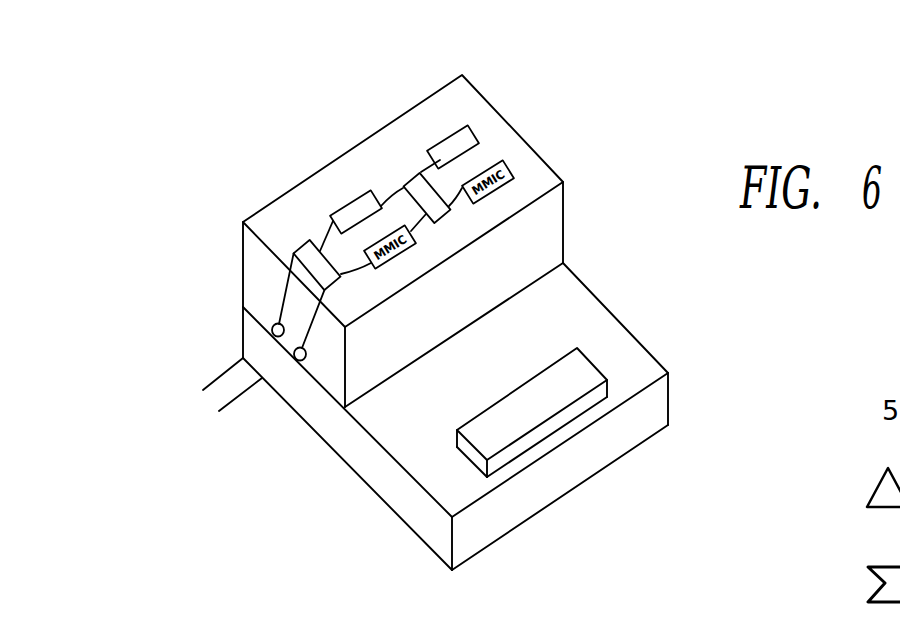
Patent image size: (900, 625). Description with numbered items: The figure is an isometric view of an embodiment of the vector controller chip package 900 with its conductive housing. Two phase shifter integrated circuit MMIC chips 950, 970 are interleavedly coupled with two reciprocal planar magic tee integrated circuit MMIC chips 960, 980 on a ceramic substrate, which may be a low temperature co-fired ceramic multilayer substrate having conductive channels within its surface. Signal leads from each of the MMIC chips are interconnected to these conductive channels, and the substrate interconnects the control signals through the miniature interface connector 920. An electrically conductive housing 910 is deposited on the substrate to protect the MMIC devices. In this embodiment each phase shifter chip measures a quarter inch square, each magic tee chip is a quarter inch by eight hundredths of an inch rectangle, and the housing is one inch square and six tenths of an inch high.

The module housing block 900 is at (243, 275).
The electrically conductive housing 910 is at (438, 522).
The miniature interface connector 920 is at (580, 385).
The phase shifter integrated circuit MMIC chip 950 is at (441, 138).
The reciprocal planar magic tee integrated circuit MMIC chip 960 is at (403, 178).
The phase shifter integrated circuit MMIC chip 970 is at (349, 197).
The reciprocal planar magic tee integrated circuit MMIC chip 980 is at (298, 248).